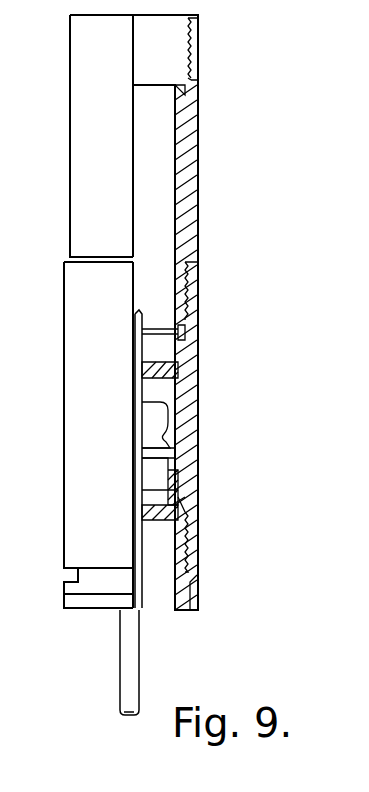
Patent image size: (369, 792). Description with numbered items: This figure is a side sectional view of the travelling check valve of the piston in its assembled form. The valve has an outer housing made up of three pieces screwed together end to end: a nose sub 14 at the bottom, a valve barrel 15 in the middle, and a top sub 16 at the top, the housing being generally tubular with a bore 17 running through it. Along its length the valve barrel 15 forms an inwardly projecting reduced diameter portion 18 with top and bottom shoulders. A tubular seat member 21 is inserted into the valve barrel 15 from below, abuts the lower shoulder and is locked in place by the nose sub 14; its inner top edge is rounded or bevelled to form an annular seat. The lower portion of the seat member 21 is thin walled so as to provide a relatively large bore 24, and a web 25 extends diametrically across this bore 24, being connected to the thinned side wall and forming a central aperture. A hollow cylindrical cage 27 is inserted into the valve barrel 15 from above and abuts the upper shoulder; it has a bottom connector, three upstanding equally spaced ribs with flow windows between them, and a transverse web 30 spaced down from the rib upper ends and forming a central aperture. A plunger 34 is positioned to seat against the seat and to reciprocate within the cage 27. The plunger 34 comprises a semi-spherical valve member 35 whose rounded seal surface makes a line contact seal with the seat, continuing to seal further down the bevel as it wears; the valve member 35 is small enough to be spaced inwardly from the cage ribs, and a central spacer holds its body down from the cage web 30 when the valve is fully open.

The nose sub 14 is at (180, 612).
The valve barrel 15 is at (198, 478).
The top sub 16 is at (198, 172).
The bore 17 is at (168, 230).
The reduced diameter portion 18 is at (178, 462).
The seat member 21 is at (185, 497).
The bore 24 is at (159, 546).
The web 25 is at (158, 508).
The cage 27 is at (176, 372).
The transverse web 30 is at (157, 363).
The plunger 34 is at (132, 462).
The valve member 35 is at (147, 430).